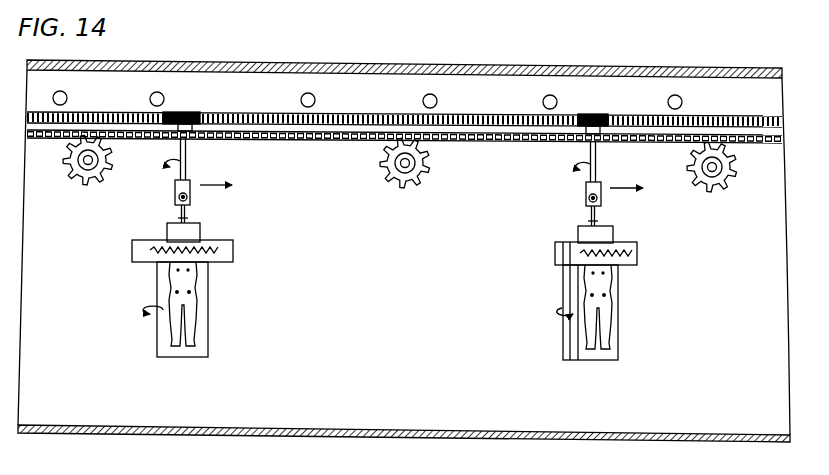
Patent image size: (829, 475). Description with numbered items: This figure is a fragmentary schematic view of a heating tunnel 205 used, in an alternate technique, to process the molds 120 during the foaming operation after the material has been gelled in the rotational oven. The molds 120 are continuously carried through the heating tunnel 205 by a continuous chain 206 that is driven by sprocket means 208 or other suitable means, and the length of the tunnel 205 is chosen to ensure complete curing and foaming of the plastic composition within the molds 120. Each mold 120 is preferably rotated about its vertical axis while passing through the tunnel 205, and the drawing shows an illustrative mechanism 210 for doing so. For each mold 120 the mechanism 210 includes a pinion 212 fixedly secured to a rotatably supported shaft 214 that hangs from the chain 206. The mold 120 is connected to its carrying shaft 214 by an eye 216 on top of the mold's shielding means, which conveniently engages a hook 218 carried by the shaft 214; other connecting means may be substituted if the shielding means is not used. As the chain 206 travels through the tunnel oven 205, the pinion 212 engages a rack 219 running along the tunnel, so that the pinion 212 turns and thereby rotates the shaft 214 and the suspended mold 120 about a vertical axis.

The mold 120 is at (214, 318).
The heating tunnel 205 is at (425, 438).
The continuous chain 206 is at (350, 141).
The sprocket means 208 is at (88, 177).
The mechanism 210 is at (200, 143).
The pinion 212 is at (190, 112).
The shaft 214 is at (178, 152).
The eye 216 is at (190, 221).
The hook 218 is at (176, 197).
The rack 219 is at (472, 118).